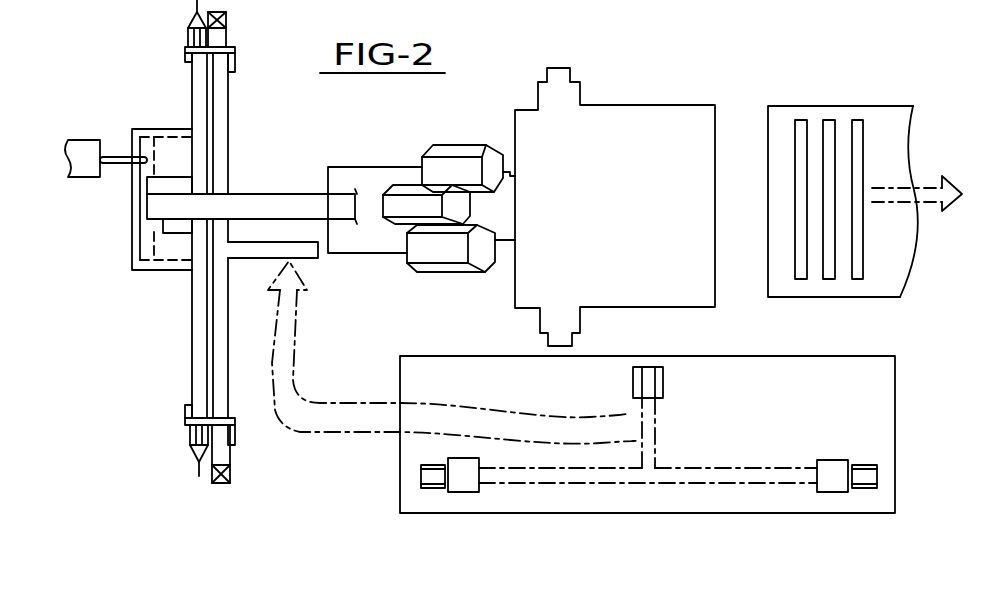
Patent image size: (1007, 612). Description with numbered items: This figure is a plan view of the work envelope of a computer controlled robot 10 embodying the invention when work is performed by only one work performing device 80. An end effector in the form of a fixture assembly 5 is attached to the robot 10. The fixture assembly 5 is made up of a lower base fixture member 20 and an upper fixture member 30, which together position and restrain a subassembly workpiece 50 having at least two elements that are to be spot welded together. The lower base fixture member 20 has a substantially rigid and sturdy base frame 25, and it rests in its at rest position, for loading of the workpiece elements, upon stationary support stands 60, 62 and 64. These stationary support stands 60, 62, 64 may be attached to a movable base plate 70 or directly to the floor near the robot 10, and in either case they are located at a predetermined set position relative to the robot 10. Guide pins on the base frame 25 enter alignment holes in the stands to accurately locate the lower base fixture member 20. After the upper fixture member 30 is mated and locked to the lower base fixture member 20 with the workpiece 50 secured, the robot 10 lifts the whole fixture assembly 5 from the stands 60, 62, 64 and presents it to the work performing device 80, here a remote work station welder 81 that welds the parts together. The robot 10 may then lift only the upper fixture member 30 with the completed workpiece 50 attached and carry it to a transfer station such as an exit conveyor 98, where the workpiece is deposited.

The fixture assembly 5 is at (287, 75).
The programmable robot 10 is at (624, 191).
The lower base fixture member 20 is at (192, 361).
The base frame 25 is at (257, 258).
The upper fixture member 30 is at (196, 174).
The subassembly workpiece 50 is at (155, 272).
The stationary support stand 60 is at (856, 465).
The stationary support stand 62 is at (470, 492).
The stationary support stand 64 is at (663, 388).
The movable base plate 70 is at (806, 409).
The work performing device 80 is at (152, 100).
The remote work station welder 81 is at (118, 165).
The exit conveyor 98 is at (803, 106).